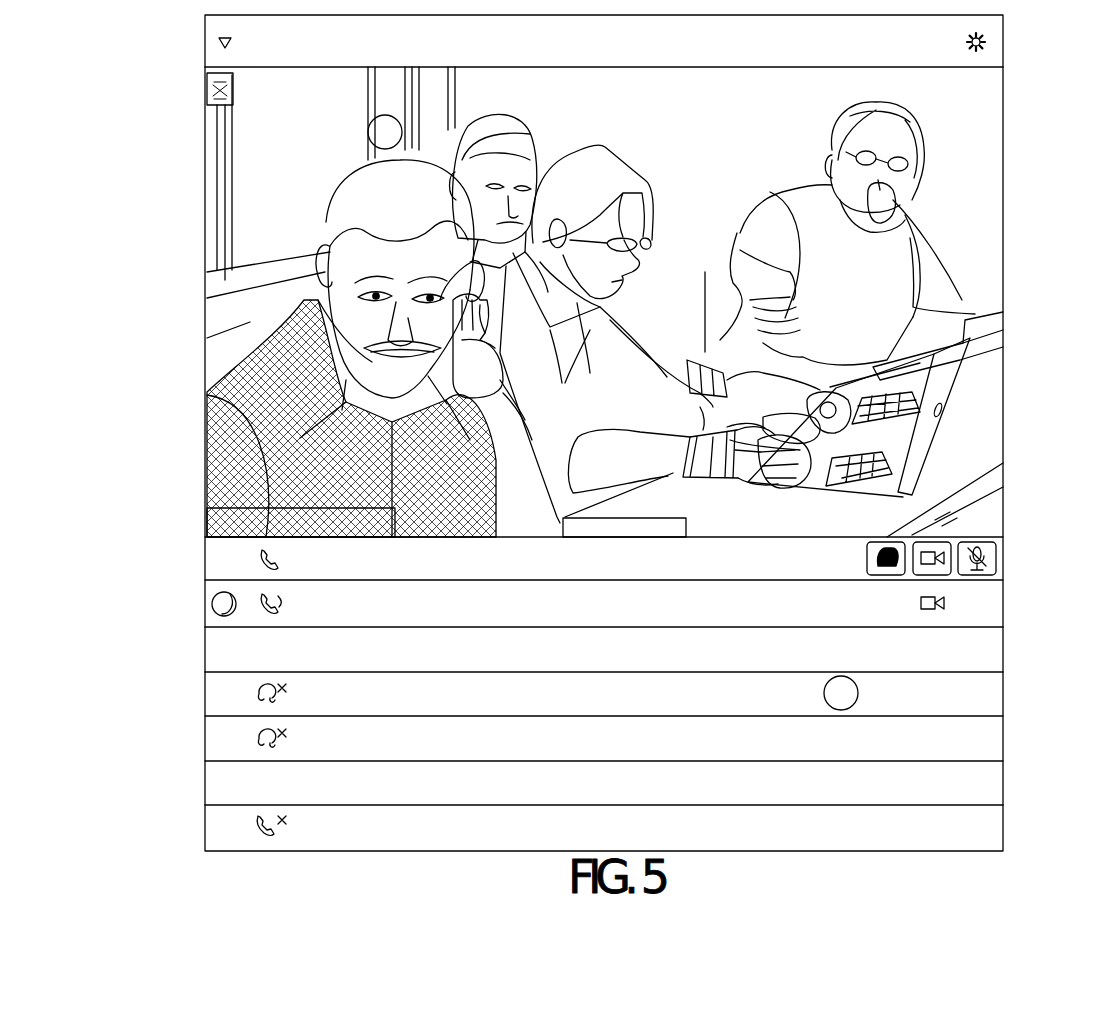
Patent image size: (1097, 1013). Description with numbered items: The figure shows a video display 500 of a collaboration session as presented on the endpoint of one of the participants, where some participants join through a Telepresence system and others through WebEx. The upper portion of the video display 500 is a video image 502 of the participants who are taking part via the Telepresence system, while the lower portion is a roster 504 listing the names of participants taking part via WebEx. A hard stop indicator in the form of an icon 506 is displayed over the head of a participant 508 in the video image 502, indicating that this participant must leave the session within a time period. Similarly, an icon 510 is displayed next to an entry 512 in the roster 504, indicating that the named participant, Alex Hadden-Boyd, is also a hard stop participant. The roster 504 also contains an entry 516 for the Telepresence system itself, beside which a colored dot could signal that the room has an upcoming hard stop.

The video display 500 is at (100, 116).
The video image 502 is at (1006, 215).
The roster 504 is at (1010, 537).
The icon 506 is at (368, 138).
The participant 508 is at (308, 279).
The icon 510 is at (846, 698).
The entry 512 is at (230, 687).
The entry 516 is at (202, 604).